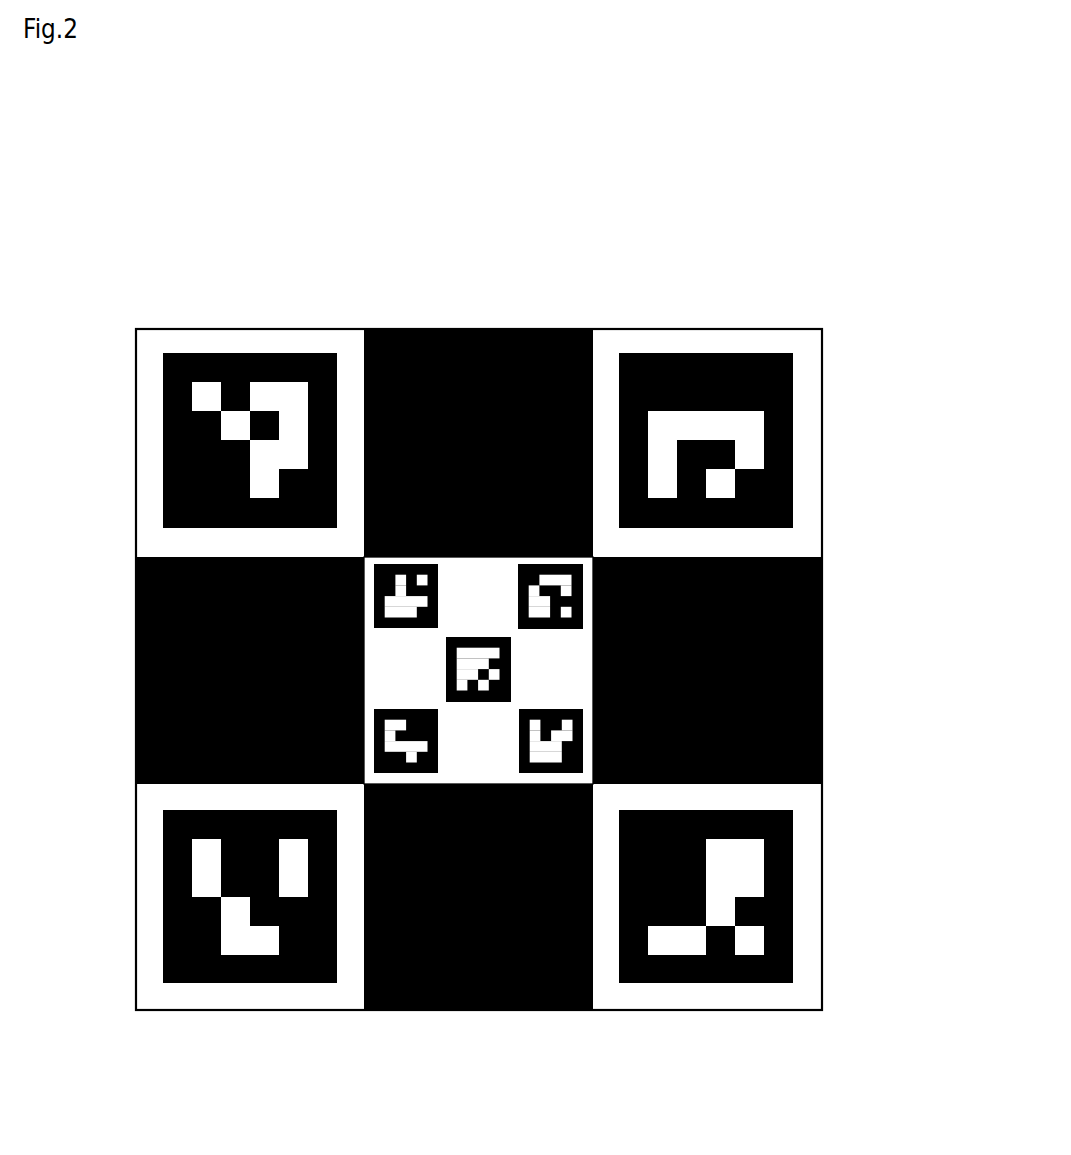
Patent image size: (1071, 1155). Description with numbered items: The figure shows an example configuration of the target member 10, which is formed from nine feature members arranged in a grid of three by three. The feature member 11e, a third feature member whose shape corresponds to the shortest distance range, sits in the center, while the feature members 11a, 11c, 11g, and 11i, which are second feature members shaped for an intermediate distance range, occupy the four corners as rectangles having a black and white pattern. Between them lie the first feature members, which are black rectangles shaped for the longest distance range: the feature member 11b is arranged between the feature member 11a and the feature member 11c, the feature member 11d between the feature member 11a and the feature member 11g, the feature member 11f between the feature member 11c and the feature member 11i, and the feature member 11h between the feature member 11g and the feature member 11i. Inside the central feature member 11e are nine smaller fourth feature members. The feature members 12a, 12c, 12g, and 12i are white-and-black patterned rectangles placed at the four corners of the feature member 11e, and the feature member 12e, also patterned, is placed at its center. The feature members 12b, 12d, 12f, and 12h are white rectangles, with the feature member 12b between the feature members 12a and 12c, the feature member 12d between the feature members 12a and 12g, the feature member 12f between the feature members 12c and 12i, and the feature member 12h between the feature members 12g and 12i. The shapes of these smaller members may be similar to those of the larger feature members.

The target member 10 is at (558, 138).
The feature member 11a is at (251, 328).
The feature member 11b is at (407, 328).
The feature member 11c is at (707, 328).
The feature member 11d is at (136, 694).
The feature member 11e is at (593, 638).
The feature member 11f is at (822, 590).
The feature member 11g is at (251, 1010).
The feature member 11h is at (480, 1010).
The feature member 11i is at (708, 1010).
The feature member 12a is at (373, 582).
The feature member 12b is at (487, 563).
The feature member 12c is at (553, 564).
The feature member 12d is at (364, 656).
The feature member 12e is at (511, 667).
The feature member 12f is at (593, 668).
The feature member 12g is at (373, 739).
The feature member 12h is at (480, 784).
The feature member 12i is at (549, 773).